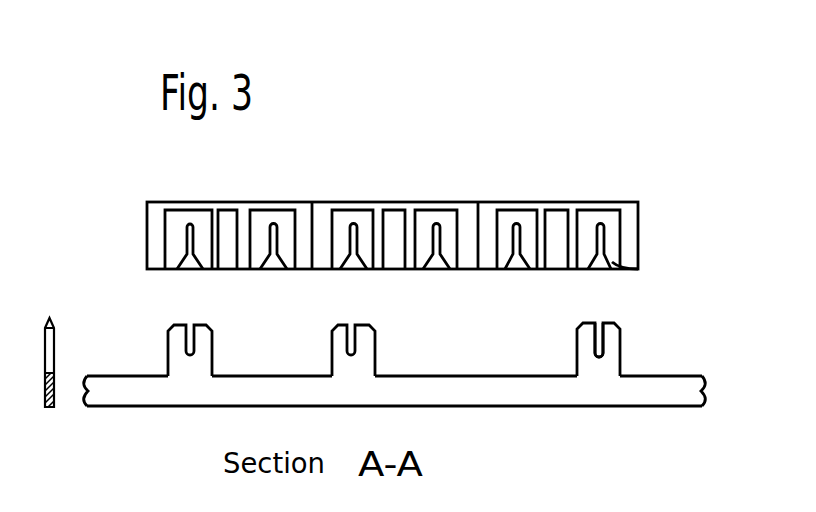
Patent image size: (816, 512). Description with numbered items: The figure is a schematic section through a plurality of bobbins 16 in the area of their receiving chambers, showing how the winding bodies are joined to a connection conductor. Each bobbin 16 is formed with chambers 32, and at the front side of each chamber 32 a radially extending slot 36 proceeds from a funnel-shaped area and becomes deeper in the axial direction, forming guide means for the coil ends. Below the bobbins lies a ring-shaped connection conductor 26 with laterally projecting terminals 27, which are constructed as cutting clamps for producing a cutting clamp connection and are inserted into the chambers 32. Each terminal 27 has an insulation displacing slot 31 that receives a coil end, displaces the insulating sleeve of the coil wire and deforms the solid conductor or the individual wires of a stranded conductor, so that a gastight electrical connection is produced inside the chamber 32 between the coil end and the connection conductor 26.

The bobbin 16 is at (157, 212).
The chamber 32 is at (177, 262).
The slot 36 is at (598, 272).
The connection conductor 26 is at (542, 393).
The terminal 27 is at (202, 364).
The insulation displacing slot 31 is at (600, 324).